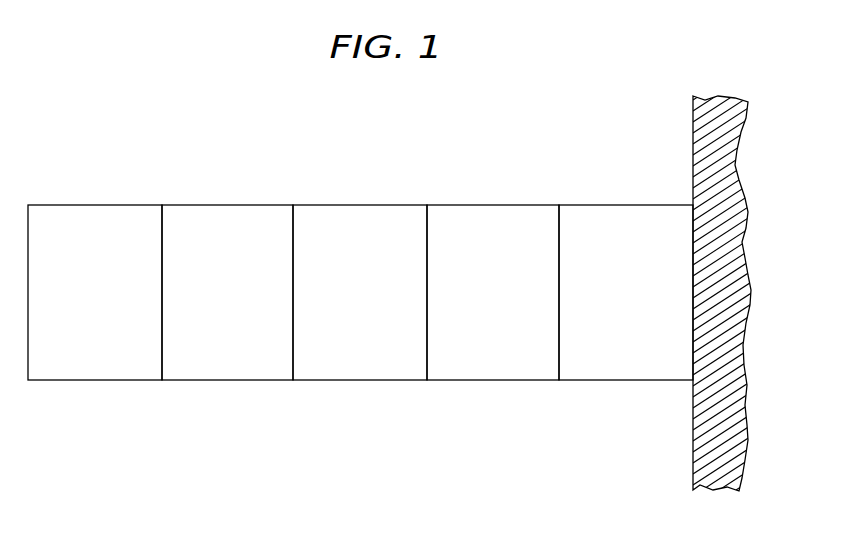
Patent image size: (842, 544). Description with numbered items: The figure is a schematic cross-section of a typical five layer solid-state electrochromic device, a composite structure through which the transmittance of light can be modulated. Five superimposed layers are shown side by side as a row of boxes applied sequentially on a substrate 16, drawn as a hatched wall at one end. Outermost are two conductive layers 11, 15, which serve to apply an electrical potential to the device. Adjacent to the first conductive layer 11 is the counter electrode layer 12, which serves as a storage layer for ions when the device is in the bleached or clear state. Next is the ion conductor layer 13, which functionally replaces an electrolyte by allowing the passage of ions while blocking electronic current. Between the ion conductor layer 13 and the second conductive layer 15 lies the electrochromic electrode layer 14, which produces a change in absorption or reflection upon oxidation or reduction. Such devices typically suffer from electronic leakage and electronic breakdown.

The conductive layer 11 is at (85, 308).
The counter electrode layer 12 is at (218, 308).
The ion conductor layer 13 is at (350, 308).
The electrochromic electrode layer 14 is at (483, 308).
The conductive layer 15 is at (617, 308).
The substrate 16 is at (745, 271).